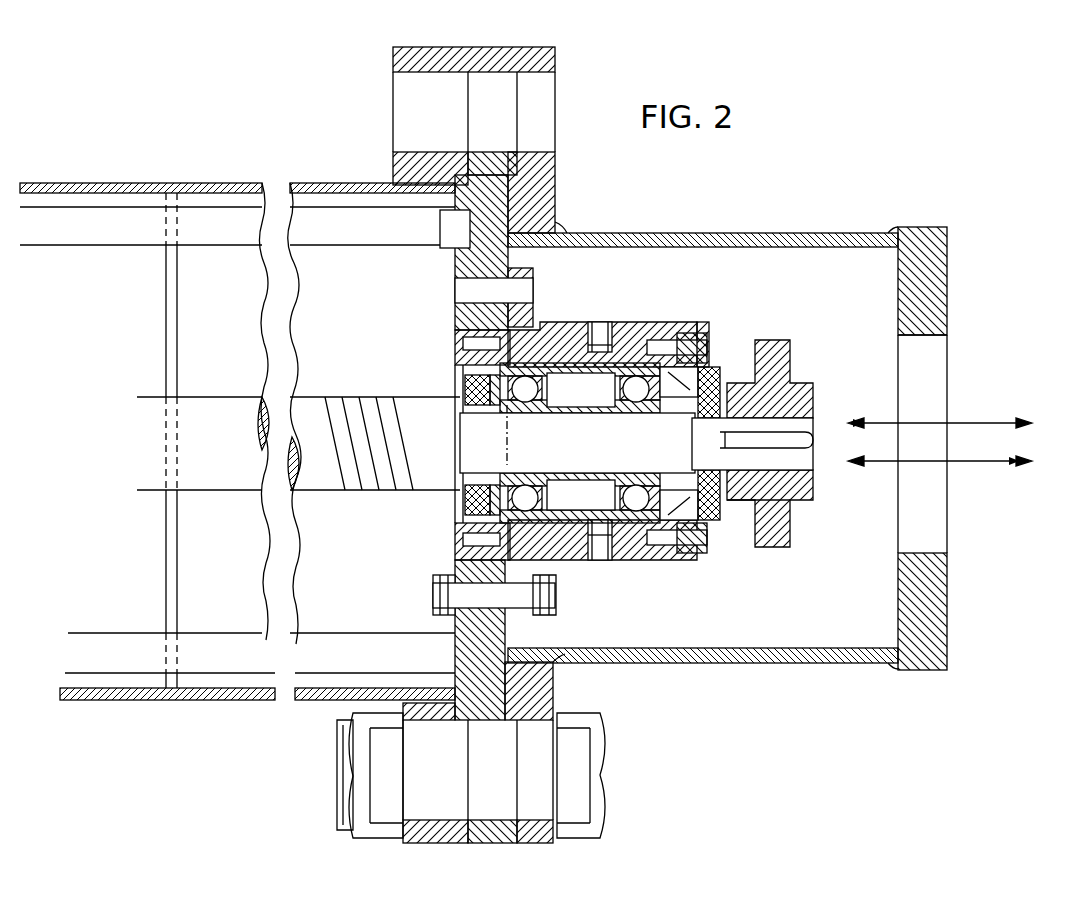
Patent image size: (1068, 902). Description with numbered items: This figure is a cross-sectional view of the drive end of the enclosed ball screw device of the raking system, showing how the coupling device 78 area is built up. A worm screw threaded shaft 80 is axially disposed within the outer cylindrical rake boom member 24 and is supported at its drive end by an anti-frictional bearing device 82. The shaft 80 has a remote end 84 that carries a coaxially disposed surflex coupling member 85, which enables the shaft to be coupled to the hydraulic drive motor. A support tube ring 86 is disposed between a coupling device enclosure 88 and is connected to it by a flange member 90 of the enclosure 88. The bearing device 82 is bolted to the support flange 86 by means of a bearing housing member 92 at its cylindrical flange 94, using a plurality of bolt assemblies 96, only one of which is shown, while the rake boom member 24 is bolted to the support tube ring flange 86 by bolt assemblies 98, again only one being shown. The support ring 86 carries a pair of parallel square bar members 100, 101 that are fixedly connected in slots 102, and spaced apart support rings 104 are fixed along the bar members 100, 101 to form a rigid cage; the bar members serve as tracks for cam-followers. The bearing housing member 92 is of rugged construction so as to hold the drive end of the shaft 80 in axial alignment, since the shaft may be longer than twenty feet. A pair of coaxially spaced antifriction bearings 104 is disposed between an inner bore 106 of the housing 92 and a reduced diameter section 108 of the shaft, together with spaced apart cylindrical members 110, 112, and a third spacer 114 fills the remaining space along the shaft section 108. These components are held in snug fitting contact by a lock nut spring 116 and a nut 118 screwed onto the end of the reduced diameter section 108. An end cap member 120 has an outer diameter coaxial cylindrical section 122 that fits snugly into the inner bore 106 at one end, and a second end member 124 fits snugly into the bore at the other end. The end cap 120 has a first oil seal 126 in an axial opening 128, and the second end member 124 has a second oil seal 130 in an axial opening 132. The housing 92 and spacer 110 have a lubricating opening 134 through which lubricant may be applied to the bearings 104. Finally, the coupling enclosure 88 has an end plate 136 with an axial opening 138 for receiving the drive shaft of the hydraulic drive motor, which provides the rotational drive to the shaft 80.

The cylindrical rake boom member 24 is at (256, 182).
The coupling device 78 is at (800, 208).
The worm screw threaded shaft 80 is at (362, 384).
The anti-frictional bearing device 82 is at (662, 565).
The remote end 84 is at (808, 422).
The surflex coupling member 85 is at (780, 378).
The support tube ring 86 is at (483, 48).
The coupling device enclosure 88 is at (834, 234).
The flange member 90 is at (522, 210).
The bearing housing member 92 is at (628, 332).
The cylindrical flange 94 is at (515, 279).
The bolt assemblies 96 is at (557, 600).
The bolt assemblies 98 is at (610, 768).
The square bar member 100 is at (143, 246).
The square bar member 101 is at (130, 630).
The slots 102 is at (470, 218).
The support rings 104 is at (165, 334).
The inner bore 106 is at (592, 336).
The reduced diameter section 108 is at (598, 466).
The cylindrical member 110 is at (581, 441).
The cylindrical member 112 is at (598, 418).
The third spacer 114 is at (473, 418).
The lock nut spring 116 is at (700, 352).
The nut 118 is at (694, 386).
The end cap member 120 is at (687, 336).
The outer diameter coaxial cylindrical section 122 is at (706, 530).
The second end member 124 is at (451, 441).
The first oil seal 126 is at (716, 398).
The axial opening 128 is at (768, 505).
The second oil seal 130 is at (468, 386).
The axial opening 132 is at (473, 505).
The lubricating opening 134 is at (600, 322).
The end plate 136 is at (950, 278).
The axial opening 138 is at (917, 337).